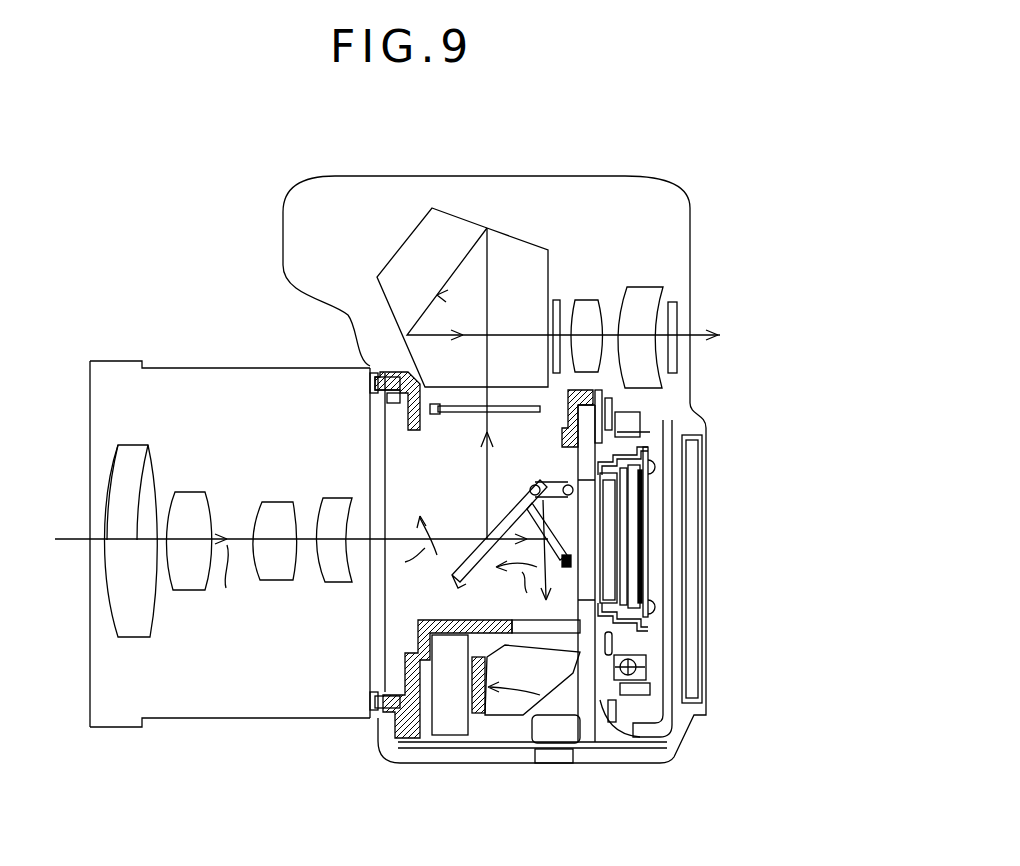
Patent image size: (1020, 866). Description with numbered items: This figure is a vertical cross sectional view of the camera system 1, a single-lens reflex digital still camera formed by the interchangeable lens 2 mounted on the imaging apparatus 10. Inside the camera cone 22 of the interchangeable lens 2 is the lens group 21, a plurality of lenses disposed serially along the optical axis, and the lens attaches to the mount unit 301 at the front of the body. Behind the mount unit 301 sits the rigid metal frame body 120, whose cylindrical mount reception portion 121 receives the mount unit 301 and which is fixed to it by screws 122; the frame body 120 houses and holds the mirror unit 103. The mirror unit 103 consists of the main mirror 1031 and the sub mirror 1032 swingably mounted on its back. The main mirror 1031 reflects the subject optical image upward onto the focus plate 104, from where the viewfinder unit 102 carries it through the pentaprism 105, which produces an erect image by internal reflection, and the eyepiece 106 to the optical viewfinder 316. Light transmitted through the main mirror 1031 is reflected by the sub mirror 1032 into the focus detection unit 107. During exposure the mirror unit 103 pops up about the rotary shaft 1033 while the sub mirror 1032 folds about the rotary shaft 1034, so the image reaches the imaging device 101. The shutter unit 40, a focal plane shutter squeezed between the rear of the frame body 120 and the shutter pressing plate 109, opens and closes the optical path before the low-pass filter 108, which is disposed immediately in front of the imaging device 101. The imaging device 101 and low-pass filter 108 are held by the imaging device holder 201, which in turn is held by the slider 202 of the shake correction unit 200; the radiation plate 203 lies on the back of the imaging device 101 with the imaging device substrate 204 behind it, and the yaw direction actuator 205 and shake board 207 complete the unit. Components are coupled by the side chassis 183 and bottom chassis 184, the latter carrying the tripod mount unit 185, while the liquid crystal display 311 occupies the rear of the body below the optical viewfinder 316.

The camera system 1 is at (700, 190).
The interchangeable lens 2 is at (199, 358).
The imaging apparatus 10 is at (690, 242).
The lens group 21 is at (352, 445).
The camera cone 22 is at (210, 720).
The shutter unit 40 is at (633, 727).
The imaging device 101 is at (632, 518).
The viewfinder unit 102 is at (531, 231).
The mirror unit 103 is at (442, 582).
The focus plate 104 is at (452, 413).
The pentaprism 105 is at (415, 272).
The eyepiece 106 is at (597, 293).
The focus detection unit 107 is at (503, 707).
The low-pass filter 108 is at (608, 493).
The shutter pressing plate 109 is at (605, 390).
The frame body 120 is at (432, 738).
The mount reception portion 121 is at (398, 372).
The screws 122 is at (370, 375).
The side chassis 183 is at (668, 606).
The bottom chassis 184 is at (585, 749).
The tripod mount unit 185 is at (555, 760).
The shake correction unit 200 is at (650, 634).
The imaging device holder 201 is at (640, 445).
The slider 202 is at (640, 426).
The radiation plate 203 is at (642, 549).
The imaging device substrate 204 is at (630, 572).
The yaw direction actuator 205 is at (640, 668).
The shake board 207 is at (608, 412).
The mount unit 301 is at (380, 383).
The liquid crystal display 311 is at (690, 527).
The optical viewfinder 316 is at (678, 312).
The main mirror 1031 is at (480, 565).
The sub mirror 1032 is at (565, 620).
The rotary shaft 1033 is at (558, 462).
The rotary shaft 1034 is at (545, 483).